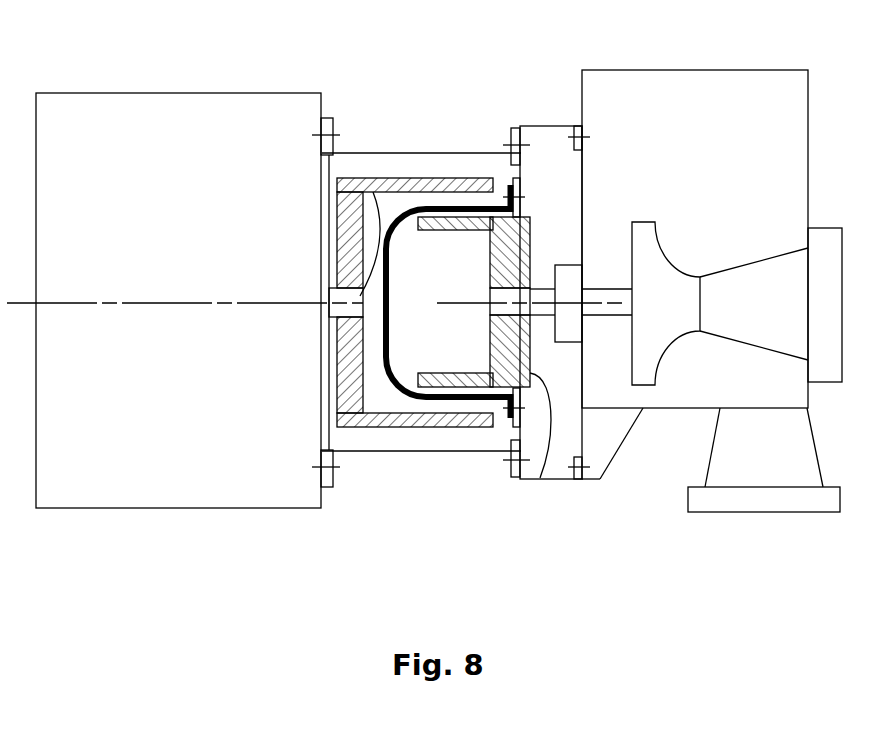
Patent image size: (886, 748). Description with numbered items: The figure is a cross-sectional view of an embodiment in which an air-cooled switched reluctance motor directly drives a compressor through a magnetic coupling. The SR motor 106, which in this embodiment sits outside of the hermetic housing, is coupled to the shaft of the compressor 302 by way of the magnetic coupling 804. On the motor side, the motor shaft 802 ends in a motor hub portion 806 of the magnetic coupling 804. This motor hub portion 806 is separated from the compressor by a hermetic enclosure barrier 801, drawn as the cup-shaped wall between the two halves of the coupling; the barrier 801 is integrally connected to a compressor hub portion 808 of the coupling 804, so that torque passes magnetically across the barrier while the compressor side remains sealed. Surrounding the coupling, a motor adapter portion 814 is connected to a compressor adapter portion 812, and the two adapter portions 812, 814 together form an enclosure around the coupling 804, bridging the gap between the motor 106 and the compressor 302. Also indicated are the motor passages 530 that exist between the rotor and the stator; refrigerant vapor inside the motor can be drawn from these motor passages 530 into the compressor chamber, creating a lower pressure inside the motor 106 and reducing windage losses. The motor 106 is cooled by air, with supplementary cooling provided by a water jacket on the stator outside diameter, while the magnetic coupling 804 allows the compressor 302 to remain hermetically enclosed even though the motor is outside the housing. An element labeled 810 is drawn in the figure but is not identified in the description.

The SR motor 106 is at (217, 102).
The compressor 302 is at (623, 80).
The motor adapter portion 814 is at (397, 153).
The motor shaft 802 is at (374, 191).
The hermetic enclosure barrier 801 is at (443, 205).
The inner magnet ring 810 is at (482, 200).
The motor hub portion 806 is at (355, 427).
The motor passages 530 is at (435, 442).
The magnetic coupling 804 is at (485, 495).
The compressor hub portion 808 is at (540, 480).
The compressor adapter portion 812 is at (560, 479).